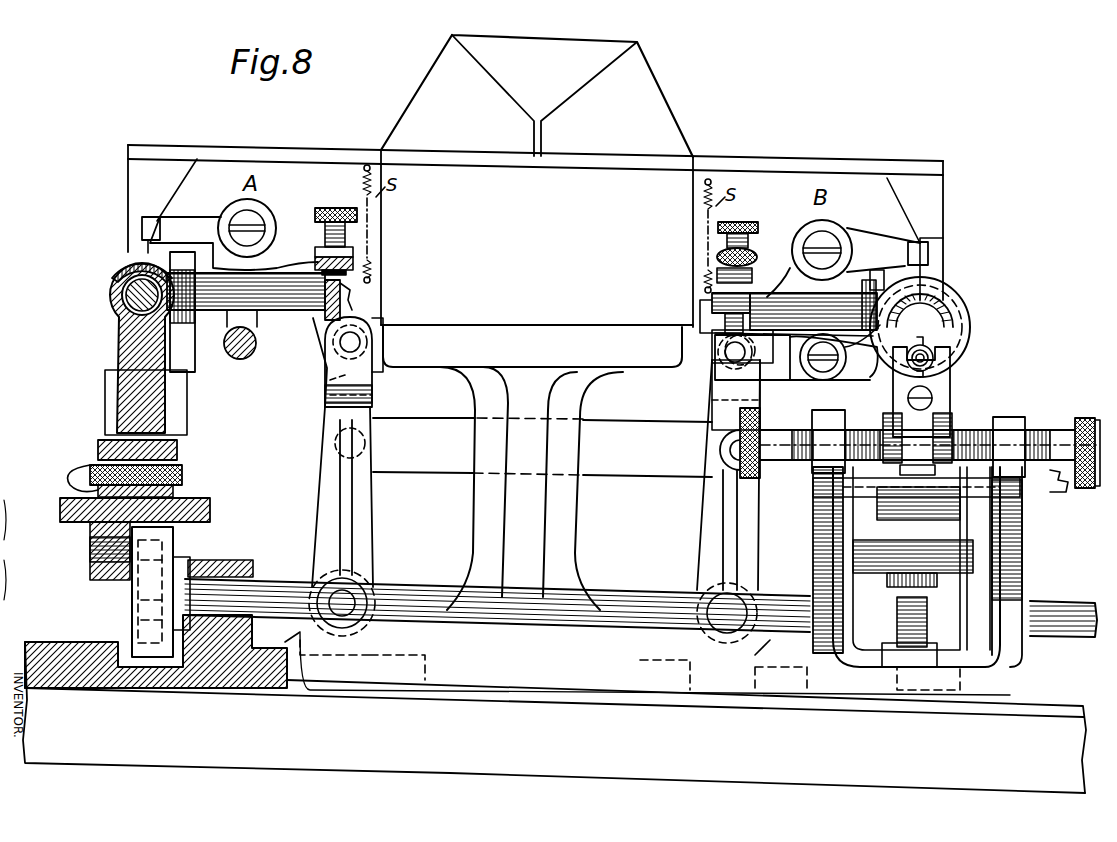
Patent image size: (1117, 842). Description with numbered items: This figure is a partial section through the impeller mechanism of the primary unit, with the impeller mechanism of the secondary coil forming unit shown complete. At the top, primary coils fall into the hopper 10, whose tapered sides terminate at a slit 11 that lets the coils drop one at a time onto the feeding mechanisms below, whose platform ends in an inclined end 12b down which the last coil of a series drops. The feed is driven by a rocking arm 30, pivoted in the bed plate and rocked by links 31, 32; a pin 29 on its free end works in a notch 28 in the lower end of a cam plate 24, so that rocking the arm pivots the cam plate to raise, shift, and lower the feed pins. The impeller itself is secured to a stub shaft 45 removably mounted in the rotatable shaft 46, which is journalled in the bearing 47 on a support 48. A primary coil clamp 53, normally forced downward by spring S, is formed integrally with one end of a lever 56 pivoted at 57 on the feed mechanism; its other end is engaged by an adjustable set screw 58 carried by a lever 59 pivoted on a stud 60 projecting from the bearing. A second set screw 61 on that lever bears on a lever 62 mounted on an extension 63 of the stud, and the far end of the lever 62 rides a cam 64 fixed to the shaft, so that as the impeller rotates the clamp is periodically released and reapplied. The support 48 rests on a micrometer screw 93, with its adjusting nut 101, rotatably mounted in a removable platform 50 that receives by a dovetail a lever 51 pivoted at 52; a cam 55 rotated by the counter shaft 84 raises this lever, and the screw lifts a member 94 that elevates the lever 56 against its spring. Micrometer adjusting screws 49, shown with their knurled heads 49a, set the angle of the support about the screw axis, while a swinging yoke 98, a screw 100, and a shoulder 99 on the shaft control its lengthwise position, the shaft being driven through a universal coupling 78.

The hopper 10 is at (548, 56).
The slit 11 is at (535, 116).
The inclined end of the platform 12b is at (166, 196).
The primary coil clamp 53 is at (142, 228).
The lever 56 is at (193, 229).
The pivot 57 is at (258, 226).
The adjustable set screw 58 is at (358, 214).
The lever 59 is at (352, 301).
The stud 60 is at (290, 286).
The adjustable set screw 61 is at (757, 254).
The lever 62 is at (798, 366).
The extension of the stud 63 is at (258, 339).
The bearing 47 is at (110, 281).
The rotatable shaft 46 is at (120, 297).
The stub shaft 45 is at (133, 304).
The support 48 is at (105, 399).
The member 94 is at (198, 356).
The micrometer screw 93 is at (178, 443).
The removable platform 50 is at (98, 451).
The adjusting nut 101 is at (184, 477).
The lever 51 is at (212, 508).
The cam 55 is at (130, 596).
The cam plate 24 is at (315, 341).
The notch 28 is at (332, 386).
The pin 29 is at (388, 338).
The rocking arm 30 is at (382, 526).
The link 31 is at (621, 466).
The second counter shaft 84 is at (408, 593).
The micrometer adjusting screws 49 is at (845, 441).
The knurled knob 49a is at (740, 423).
The link 32 is at (1053, 493).
The pivot 52 is at (890, 501).
The cam 64 is at (968, 303).
The shoulder 99 is at (945, 331).
The universal coupling 78 is at (933, 356).
The swinging yoke 98 is at (950, 366).
The screw 100 is at (932, 397).